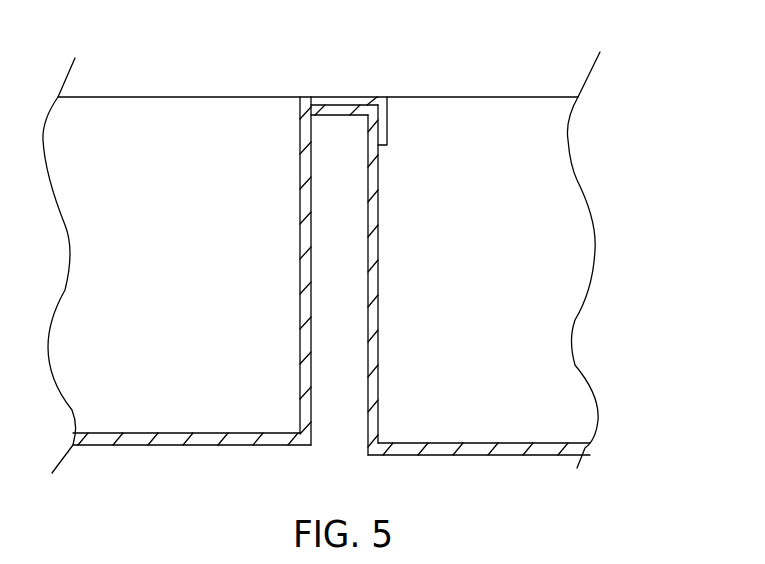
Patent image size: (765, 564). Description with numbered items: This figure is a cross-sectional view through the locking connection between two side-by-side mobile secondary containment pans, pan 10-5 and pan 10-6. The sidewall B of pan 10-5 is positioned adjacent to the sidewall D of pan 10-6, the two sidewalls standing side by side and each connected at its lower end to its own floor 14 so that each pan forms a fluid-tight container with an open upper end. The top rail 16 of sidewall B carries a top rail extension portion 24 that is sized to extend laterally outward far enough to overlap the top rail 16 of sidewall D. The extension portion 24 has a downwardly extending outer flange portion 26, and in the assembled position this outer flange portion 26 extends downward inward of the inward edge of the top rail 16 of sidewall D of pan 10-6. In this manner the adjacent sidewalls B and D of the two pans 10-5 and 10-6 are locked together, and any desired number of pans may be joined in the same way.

The pan 10-5 is at (183, 97).
The pan 10-6 is at (477, 97).
The floor 14 is at (180, 446).
The top rail 16 is at (343, 116).
The top rail extension portion 24 is at (347, 104).
The outer flange portion 26 is at (385, 120).
The right hand pan sidewall B is at (308, 283).
The left pan sidewall D is at (372, 283).